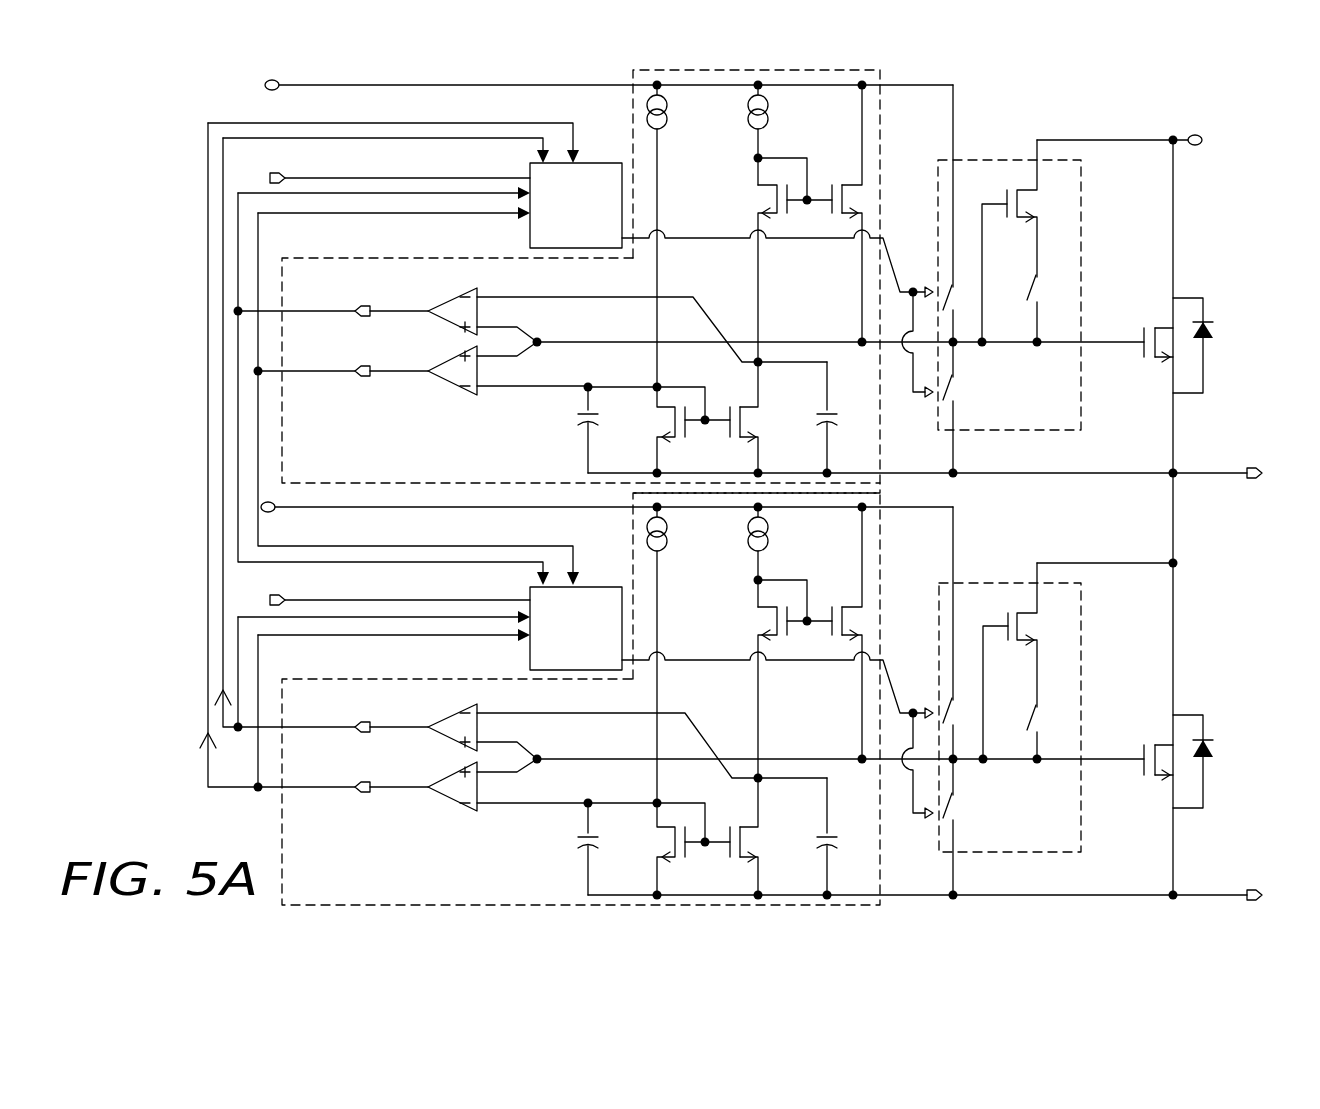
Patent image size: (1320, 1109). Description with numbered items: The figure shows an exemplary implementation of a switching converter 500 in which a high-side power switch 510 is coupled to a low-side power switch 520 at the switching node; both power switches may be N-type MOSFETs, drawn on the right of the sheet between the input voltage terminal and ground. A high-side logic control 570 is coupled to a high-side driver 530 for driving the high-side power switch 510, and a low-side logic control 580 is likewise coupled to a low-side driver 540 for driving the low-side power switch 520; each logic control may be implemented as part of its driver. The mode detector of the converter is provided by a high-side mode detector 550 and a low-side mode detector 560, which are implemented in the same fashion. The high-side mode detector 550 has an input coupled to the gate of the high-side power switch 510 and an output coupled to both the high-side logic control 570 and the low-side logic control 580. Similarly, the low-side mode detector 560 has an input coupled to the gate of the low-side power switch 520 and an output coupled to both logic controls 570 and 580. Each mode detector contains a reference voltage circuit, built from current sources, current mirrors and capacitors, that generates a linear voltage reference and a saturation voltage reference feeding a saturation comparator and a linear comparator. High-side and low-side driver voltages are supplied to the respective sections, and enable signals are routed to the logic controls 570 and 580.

The switching converter 500 is at (184, 86).
The high-side power switch 510 is at (1192, 298).
The low-side power switch 520 is at (1192, 715).
The high-side driver 530 is at (992, 160).
The low-side driver 540 is at (992, 583).
The high-side mode detector 550 is at (702, 68).
The low-side mode detector 560 is at (852, 902).
The high-side logic control 570 is at (603, 163).
The low-side logic control 580 is at (603, 587).